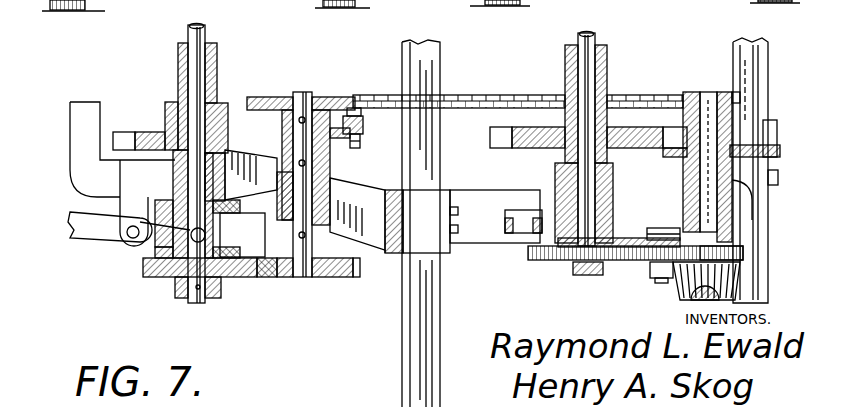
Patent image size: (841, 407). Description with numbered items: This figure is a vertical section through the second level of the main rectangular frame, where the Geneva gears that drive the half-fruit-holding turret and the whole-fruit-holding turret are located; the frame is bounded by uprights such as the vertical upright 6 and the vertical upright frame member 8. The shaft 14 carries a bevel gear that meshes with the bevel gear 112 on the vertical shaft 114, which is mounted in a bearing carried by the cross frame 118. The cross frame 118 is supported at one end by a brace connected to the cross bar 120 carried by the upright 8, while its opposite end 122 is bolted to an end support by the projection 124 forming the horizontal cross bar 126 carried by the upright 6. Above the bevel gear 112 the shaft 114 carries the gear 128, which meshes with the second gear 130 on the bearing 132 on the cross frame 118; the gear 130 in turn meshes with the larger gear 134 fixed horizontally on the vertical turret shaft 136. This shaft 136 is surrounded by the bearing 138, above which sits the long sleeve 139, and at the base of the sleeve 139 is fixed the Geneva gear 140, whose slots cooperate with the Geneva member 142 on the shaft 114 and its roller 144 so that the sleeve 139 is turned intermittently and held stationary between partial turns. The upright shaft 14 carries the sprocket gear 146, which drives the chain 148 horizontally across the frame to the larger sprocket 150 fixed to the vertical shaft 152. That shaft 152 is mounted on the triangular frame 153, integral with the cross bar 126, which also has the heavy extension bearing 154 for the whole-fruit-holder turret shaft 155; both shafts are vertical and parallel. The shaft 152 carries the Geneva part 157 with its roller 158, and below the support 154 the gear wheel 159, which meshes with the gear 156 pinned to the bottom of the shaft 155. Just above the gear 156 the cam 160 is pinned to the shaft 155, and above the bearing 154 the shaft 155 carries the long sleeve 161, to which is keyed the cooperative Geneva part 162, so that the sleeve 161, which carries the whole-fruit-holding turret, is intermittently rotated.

The vertical upright 6 is at (432, 320).
The vertical upright frame member 8 is at (757, 280).
The shaft 14 is at (683, 307).
The bevel gear 112 is at (680, 273).
The vertical shaft 114 is at (685, 177).
The cross frame 118 is at (610, 224).
The cross bar 120 is at (753, 197).
The opposite end of cross frame 122 is at (480, 232).
The projection 124 is at (442, 195).
The horizontal cross bar 126 is at (393, 253).
The gear 128 is at (740, 252).
The second gear 130 is at (640, 262).
The bearing 132 is at (622, 260).
The larger gear 134 is at (530, 263).
The vertical shaft 136 is at (578, 36).
The bearing 138 is at (567, 177).
The long sleeve 139 is at (607, 53).
The Geneva gear 140 is at (522, 127).
The Geneva member 142 is at (743, 130).
The roller 144 is at (780, 133).
The sprocket gear 146 is at (727, 90).
The chain 148 is at (640, 92).
The larger sprocket 150 is at (270, 93).
The vertical shaft 152 is at (300, 97).
The triangular frame 153 is at (365, 197).
The extension bearing 154 is at (247, 170).
The whole-fruit-holder turret shaft 155 is at (188, 30).
The gear 156 is at (155, 277).
The part of a Geneva 157 is at (328, 135).
The roller 158 is at (367, 134).
The gear wheel 159 is at (272, 270).
The cam 160 is at (222, 237).
The long sleeve 161 is at (178, 55).
The cooperative part of the Geneva 162 is at (150, 135).